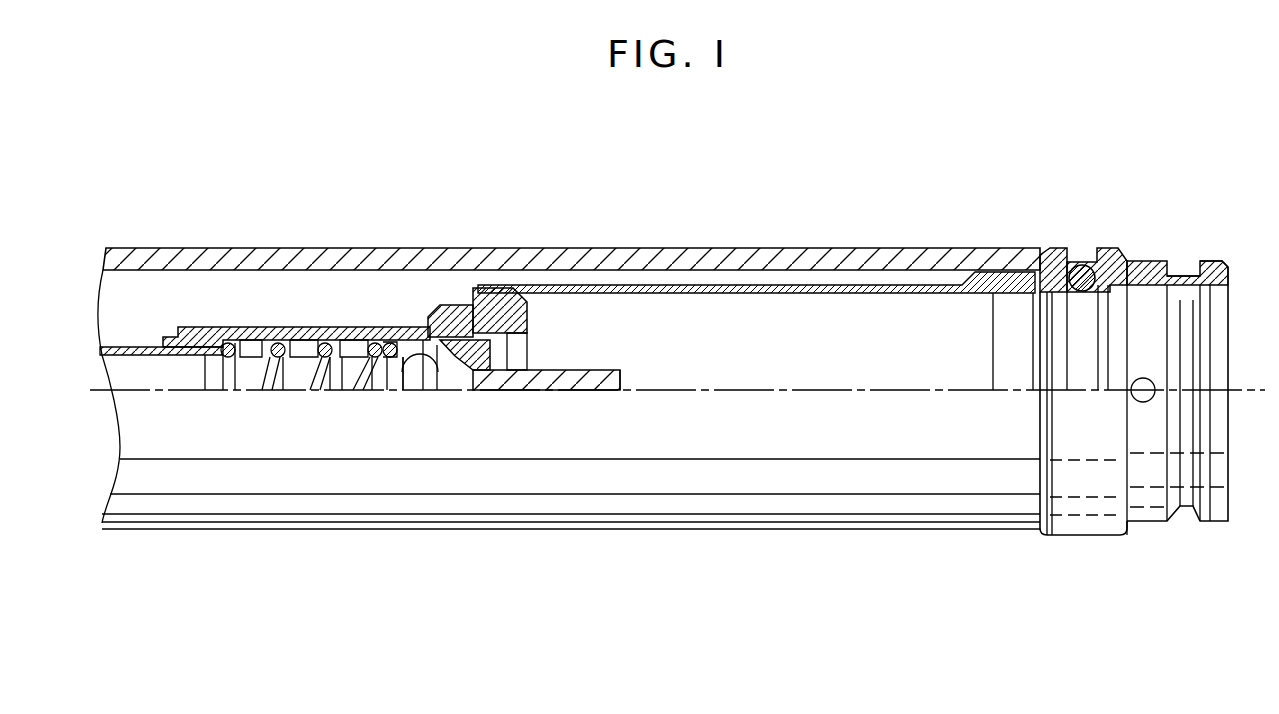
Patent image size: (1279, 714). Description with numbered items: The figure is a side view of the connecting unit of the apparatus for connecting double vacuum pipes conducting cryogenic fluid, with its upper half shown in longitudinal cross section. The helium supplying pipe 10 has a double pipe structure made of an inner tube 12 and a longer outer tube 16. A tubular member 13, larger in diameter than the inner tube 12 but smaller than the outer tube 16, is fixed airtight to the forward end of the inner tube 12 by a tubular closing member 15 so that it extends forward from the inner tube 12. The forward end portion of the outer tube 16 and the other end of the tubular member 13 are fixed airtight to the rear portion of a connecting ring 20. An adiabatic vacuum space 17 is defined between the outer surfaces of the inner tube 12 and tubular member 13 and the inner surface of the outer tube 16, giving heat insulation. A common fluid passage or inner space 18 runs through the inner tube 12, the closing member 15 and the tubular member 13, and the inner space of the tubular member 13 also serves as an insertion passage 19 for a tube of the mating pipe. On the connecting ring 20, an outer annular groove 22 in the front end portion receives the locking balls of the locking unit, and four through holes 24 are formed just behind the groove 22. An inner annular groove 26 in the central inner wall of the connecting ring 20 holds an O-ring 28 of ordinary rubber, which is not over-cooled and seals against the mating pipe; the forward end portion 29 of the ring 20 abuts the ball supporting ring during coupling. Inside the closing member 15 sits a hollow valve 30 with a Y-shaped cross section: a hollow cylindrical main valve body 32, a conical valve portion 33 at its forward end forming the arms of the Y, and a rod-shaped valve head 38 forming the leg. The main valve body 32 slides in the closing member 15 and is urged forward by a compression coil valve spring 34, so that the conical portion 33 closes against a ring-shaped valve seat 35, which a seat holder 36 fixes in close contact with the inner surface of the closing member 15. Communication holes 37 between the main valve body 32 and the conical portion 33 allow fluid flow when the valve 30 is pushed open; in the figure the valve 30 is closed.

The helium supplying pipe 10 is at (897, 533).
The inner tube 12 is at (140, 340).
The tubular member 13 is at (742, 290).
The tubular closing member 15 is at (303, 327).
The outer tube 16 is at (206, 262).
The adiabatic vacuum space 17 is at (368, 285).
The inner space 18 is at (247, 380).
The insertion passage 19 is at (835, 323).
The connecting ring 20 is at (1107, 247).
The outer annular groove 22 is at (1188, 275).
The through holes 24 is at (1148, 260).
The inner annular groove 26 is at (1095, 260).
The O-ring 28 is at (1068, 258).
The forward end portion 29 is at (1230, 262).
The hollow valve 30 is at (522, 383).
The main valve body 32 is at (390, 383).
The conical valve portion 33 is at (462, 383).
The valve spring 34 is at (357, 383).
The valve seat 35 is at (465, 345).
The seat holder 36 is at (495, 315).
The communication holes 37 is at (422, 383).
The valve head 38 is at (608, 383).